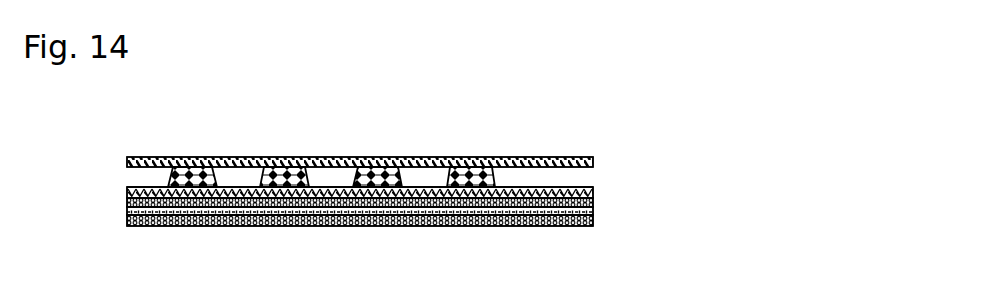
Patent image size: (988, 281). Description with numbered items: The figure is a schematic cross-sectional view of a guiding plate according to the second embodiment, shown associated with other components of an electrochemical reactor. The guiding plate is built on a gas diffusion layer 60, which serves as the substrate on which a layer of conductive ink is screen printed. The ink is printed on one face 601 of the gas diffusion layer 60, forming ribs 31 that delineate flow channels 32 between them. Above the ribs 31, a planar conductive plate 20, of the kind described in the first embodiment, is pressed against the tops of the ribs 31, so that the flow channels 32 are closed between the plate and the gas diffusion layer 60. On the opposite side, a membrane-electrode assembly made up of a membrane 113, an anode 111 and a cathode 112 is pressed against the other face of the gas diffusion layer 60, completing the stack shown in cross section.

The planar conductive plate 20 is at (593, 163).
The ribs 31 is at (308, 178).
The flow channels 32 is at (235, 178).
The gas diffusion layer 60 is at (593, 192).
The face of the gas diffusion layer 601 is at (556, 187).
The anode 111 is at (127, 203).
The cathode 112 is at (127, 220).
The membrane 113 is at (593, 211).